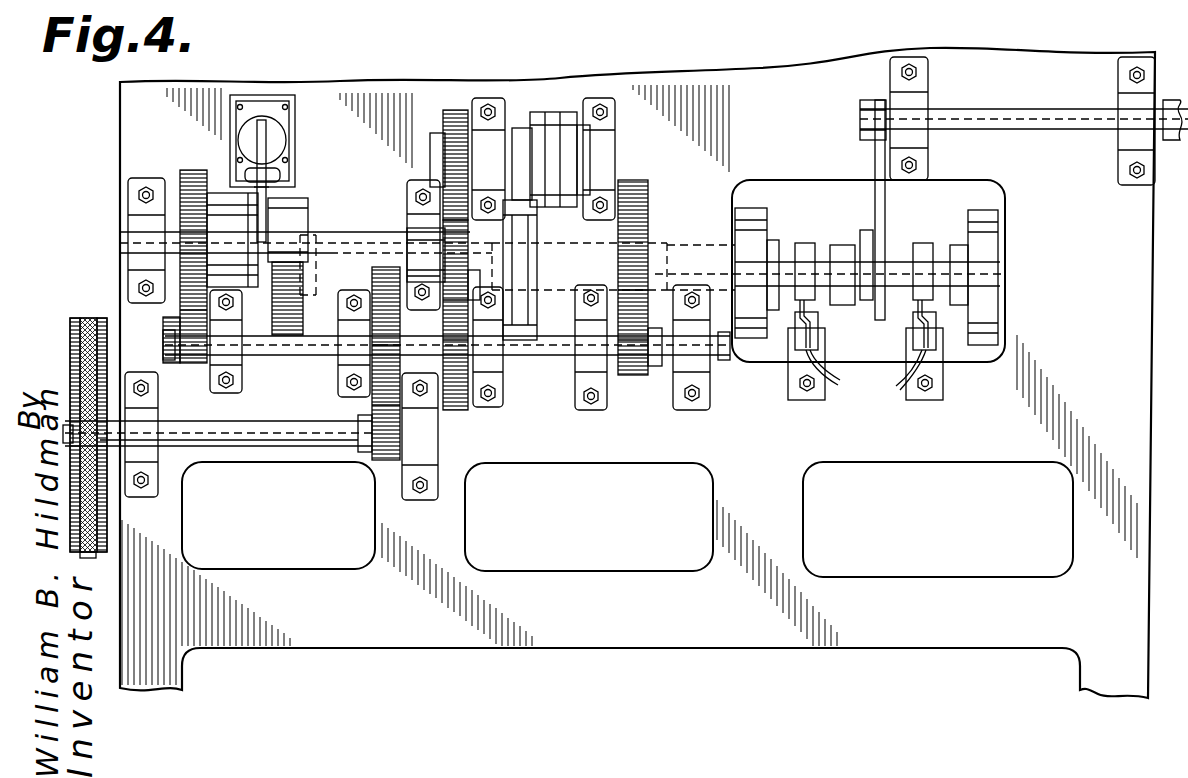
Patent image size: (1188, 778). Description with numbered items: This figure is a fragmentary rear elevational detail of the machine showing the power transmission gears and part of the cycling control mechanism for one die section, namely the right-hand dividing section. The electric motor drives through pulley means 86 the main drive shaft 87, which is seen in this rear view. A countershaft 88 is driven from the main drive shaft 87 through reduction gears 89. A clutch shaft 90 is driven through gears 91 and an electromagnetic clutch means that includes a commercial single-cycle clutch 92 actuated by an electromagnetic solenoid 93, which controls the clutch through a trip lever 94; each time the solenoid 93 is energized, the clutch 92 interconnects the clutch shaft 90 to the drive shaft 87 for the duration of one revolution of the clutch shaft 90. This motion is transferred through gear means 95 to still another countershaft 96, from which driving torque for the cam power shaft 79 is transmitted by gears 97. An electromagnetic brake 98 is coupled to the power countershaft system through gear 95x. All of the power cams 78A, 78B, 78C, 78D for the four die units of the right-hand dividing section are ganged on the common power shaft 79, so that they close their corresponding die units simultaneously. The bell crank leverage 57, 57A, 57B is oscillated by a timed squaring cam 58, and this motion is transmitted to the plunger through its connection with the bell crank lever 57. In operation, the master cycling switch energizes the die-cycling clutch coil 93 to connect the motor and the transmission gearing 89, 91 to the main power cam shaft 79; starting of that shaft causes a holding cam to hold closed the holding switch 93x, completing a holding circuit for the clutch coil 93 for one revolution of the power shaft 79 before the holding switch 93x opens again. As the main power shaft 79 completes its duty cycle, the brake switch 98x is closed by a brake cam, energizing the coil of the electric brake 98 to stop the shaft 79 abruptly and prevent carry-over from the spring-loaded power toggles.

The bell crank lever 57 is at (1178, 142).
The bell crank leverage member 57A is at (1065, 85).
The bell crank leverage member 57B is at (876, 157).
The timed squaring cam 58 is at (866, 230).
The power cam 78A is at (992, 236).
The power cam 78B is at (752, 205).
The power cam 78C is at (525, 250).
The power cam 78D is at (285, 312).
The cam power shaft 79 is at (690, 262).
The pulley means 86 is at (92, 312).
The main drive shaft 87 is at (240, 447).
The countershaft 88 is at (320, 346).
The reduction gears 89 is at (370, 425).
The clutch shaft 90 is at (333, 240).
The gears 91 is at (172, 303).
The single-cycle clutch 92 is at (218, 205).
The electromagnetic solenoid 93 is at (292, 140).
The holding switch 93x is at (795, 305).
The trip lever 94 is at (270, 197).
The gear means 95 is at (440, 290).
The gear 95x is at (446, 118).
The countershaft 96 is at (552, 350).
The gears 97 is at (649, 200).
The electromagnetic brake 98 is at (548, 118).
The brake switch 98x is at (910, 310).